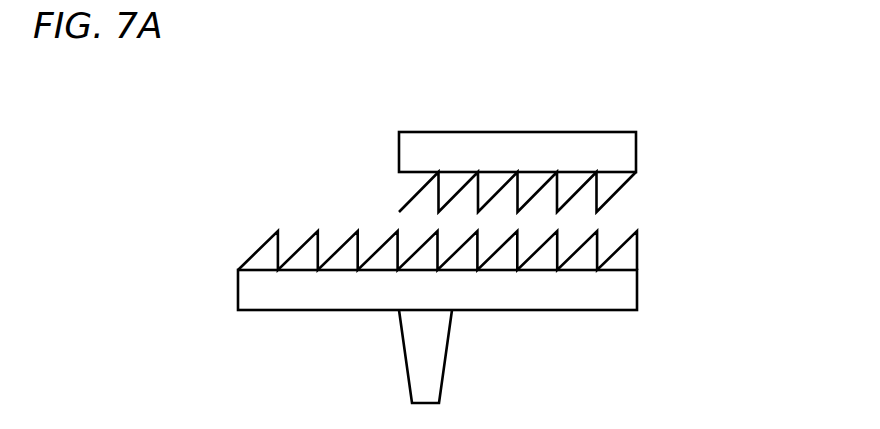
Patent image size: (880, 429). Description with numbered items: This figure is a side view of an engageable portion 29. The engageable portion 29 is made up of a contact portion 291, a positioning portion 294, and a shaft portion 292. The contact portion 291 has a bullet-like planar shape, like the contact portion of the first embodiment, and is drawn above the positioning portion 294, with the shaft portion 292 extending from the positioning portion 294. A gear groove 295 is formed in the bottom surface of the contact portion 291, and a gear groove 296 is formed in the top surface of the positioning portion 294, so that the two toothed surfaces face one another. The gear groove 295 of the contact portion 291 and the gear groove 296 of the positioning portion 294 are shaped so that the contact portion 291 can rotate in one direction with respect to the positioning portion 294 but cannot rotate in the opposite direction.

The engageable portion 29 is at (300, 87).
The contact portion 291 is at (623, 153).
The shaft portion 292 is at (436, 347).
The positioning portion 294 is at (603, 305).
The gear groove 295 is at (613, 187).
The gear groove 296 is at (630, 256).